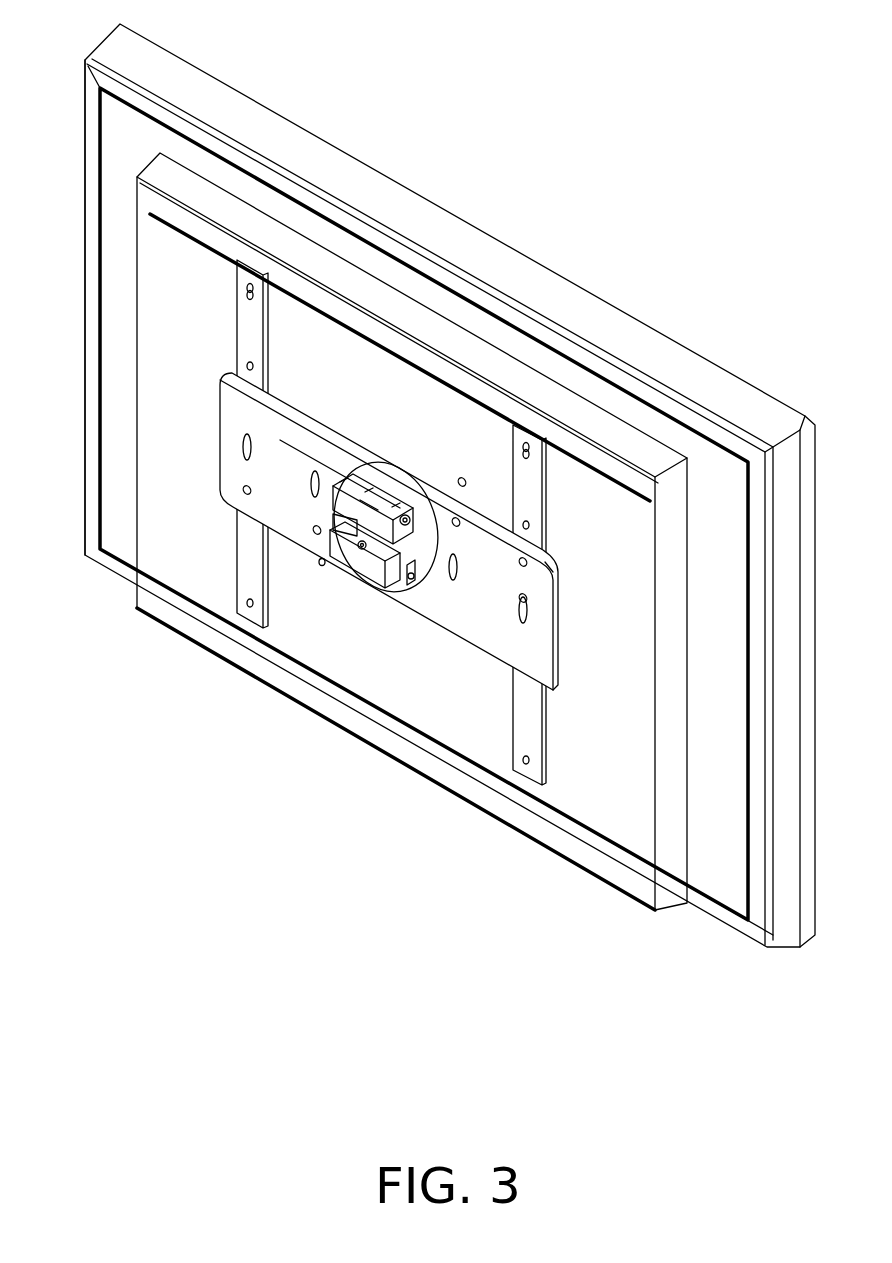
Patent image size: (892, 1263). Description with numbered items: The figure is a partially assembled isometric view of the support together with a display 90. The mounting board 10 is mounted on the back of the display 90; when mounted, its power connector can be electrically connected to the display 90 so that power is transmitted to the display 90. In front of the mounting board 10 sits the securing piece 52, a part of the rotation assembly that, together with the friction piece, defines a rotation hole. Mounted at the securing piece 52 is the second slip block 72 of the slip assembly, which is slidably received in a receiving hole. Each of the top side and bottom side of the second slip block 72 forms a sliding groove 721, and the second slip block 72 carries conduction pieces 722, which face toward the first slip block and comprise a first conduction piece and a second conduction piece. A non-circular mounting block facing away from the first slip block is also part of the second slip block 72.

The display 90 is at (292, 157).
The mounting board 10 is at (425, 405).
The securing piece 52 is at (287, 490).
The second slip block 72 is at (291, 681).
The sliding groove 721 is at (333, 505).
The conduction pieces 722 is at (362, 548).